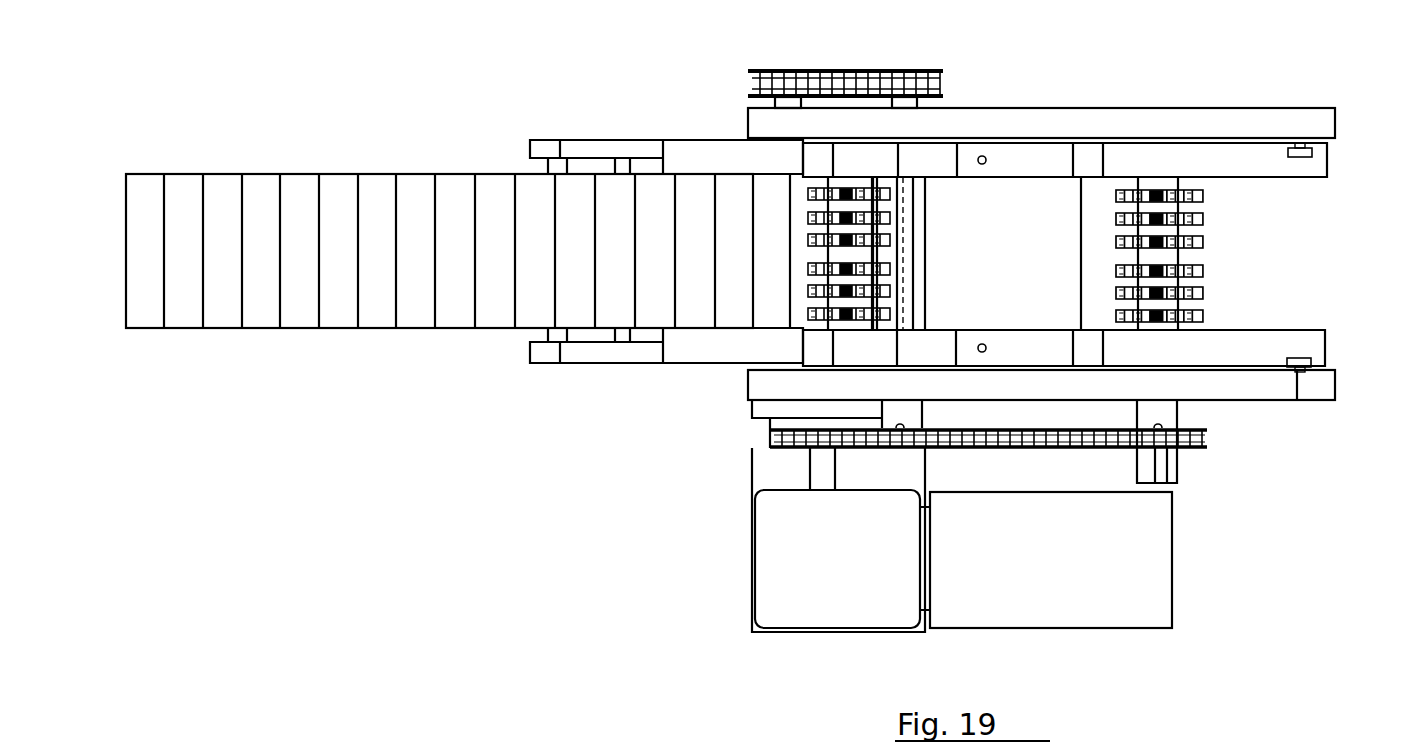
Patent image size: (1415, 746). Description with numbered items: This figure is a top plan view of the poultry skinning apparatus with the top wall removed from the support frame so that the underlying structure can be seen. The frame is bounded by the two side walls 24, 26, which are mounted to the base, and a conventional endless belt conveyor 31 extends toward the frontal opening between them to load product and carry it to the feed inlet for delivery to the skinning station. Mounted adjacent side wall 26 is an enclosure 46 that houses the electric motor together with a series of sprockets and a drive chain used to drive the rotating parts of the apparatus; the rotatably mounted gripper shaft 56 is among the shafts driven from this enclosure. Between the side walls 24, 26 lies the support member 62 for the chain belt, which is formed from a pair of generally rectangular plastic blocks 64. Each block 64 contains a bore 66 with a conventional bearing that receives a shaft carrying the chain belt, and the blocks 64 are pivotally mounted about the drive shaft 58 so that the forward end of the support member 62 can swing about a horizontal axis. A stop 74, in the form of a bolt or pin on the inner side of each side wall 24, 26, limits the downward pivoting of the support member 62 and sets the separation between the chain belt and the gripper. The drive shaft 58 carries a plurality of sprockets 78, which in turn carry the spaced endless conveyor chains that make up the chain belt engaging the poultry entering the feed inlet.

The side wall 24 is at (1025, 108).
The side wall 26 is at (1303, 404).
The endless belt conveyor 31 is at (462, 170).
The enclosure 46 is at (752, 467).
The gripper shaft 56 is at (1178, 413).
The drive shaft 58 is at (833, 253).
The support member 62 is at (1279, 178).
The block 64 is at (1170, 163).
The bore 66 is at (1069, 285).
The stop 74 is at (1303, 140).
The sprocket 78 is at (888, 215).